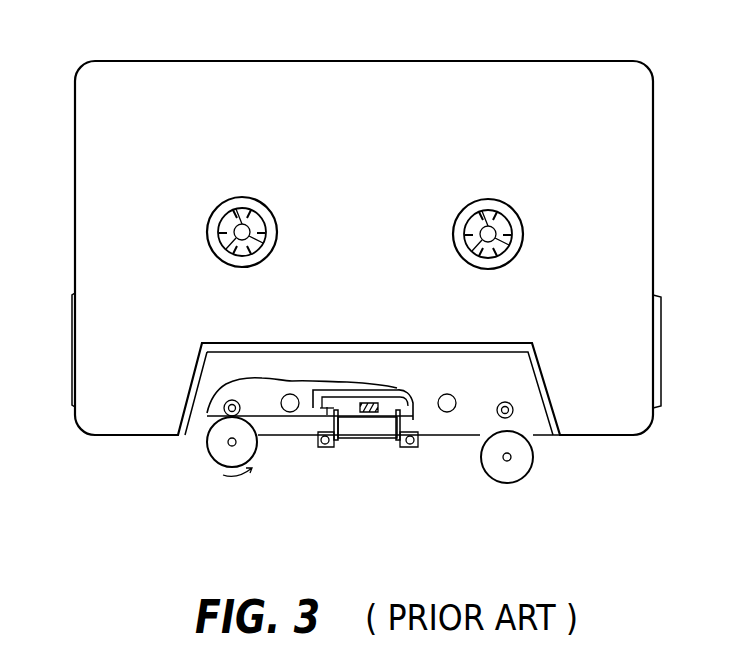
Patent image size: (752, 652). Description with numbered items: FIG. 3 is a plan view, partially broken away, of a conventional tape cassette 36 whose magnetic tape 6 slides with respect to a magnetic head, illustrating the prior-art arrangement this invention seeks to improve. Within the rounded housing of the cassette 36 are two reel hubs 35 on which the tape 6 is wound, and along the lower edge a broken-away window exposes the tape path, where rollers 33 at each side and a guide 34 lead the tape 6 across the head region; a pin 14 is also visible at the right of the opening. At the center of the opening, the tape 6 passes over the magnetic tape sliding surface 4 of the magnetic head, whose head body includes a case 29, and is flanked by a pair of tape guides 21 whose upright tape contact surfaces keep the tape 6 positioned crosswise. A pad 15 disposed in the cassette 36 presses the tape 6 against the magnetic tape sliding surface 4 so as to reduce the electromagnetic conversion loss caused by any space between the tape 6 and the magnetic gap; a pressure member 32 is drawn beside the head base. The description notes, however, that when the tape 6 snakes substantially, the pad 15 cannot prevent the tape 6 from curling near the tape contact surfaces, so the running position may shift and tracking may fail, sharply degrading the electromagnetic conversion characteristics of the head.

The tape cassette 36 is at (592, 62).
The reel hubs 35 is at (232, 240).
The pad 15 is at (374, 394).
The guide pin 14 is at (515, 417).
The guide rollers 33 is at (217, 452).
The tape guide 34 is at (207, 417).
The tape 6 is at (270, 418).
The pressure pad 32 is at (322, 415).
The tape guides 21 is at (336, 440).
The magnetic tape sliding surface 4 is at (350, 418).
The case 29 is at (377, 437).